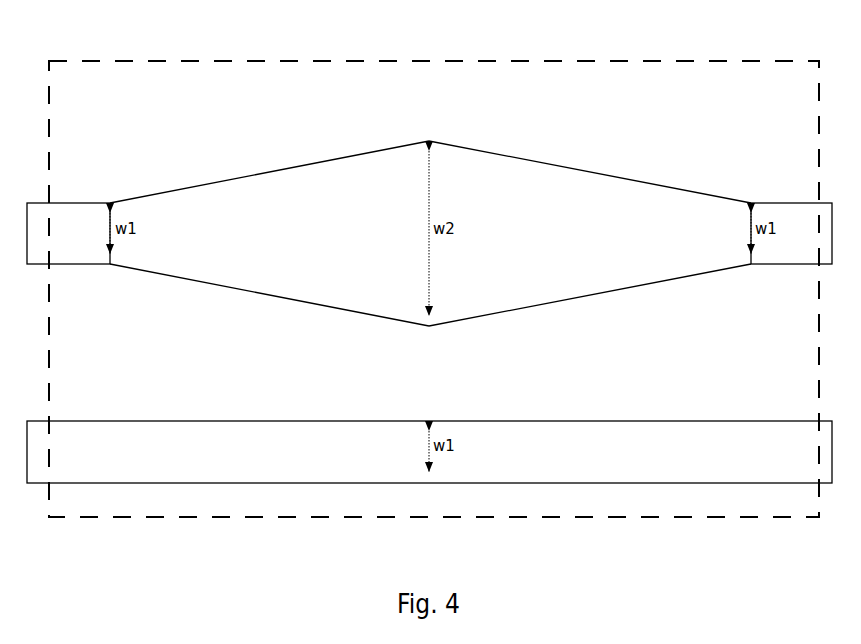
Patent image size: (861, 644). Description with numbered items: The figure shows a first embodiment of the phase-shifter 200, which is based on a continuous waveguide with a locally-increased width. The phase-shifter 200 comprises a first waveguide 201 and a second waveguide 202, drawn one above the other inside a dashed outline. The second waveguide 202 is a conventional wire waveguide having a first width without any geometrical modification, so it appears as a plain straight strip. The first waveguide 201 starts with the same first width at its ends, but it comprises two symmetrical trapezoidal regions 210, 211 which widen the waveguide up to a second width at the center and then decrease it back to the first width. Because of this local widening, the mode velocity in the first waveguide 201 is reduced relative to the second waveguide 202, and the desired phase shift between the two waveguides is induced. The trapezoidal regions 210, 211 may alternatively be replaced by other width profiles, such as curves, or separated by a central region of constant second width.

The phase-shifter 200 is at (505, 60).
The first waveguide 201 is at (53, 202).
The second waveguide 202 is at (69, 420).
The trapezoidal region 210 is at (310, 165).
The trapezoidal region 211 is at (573, 167).